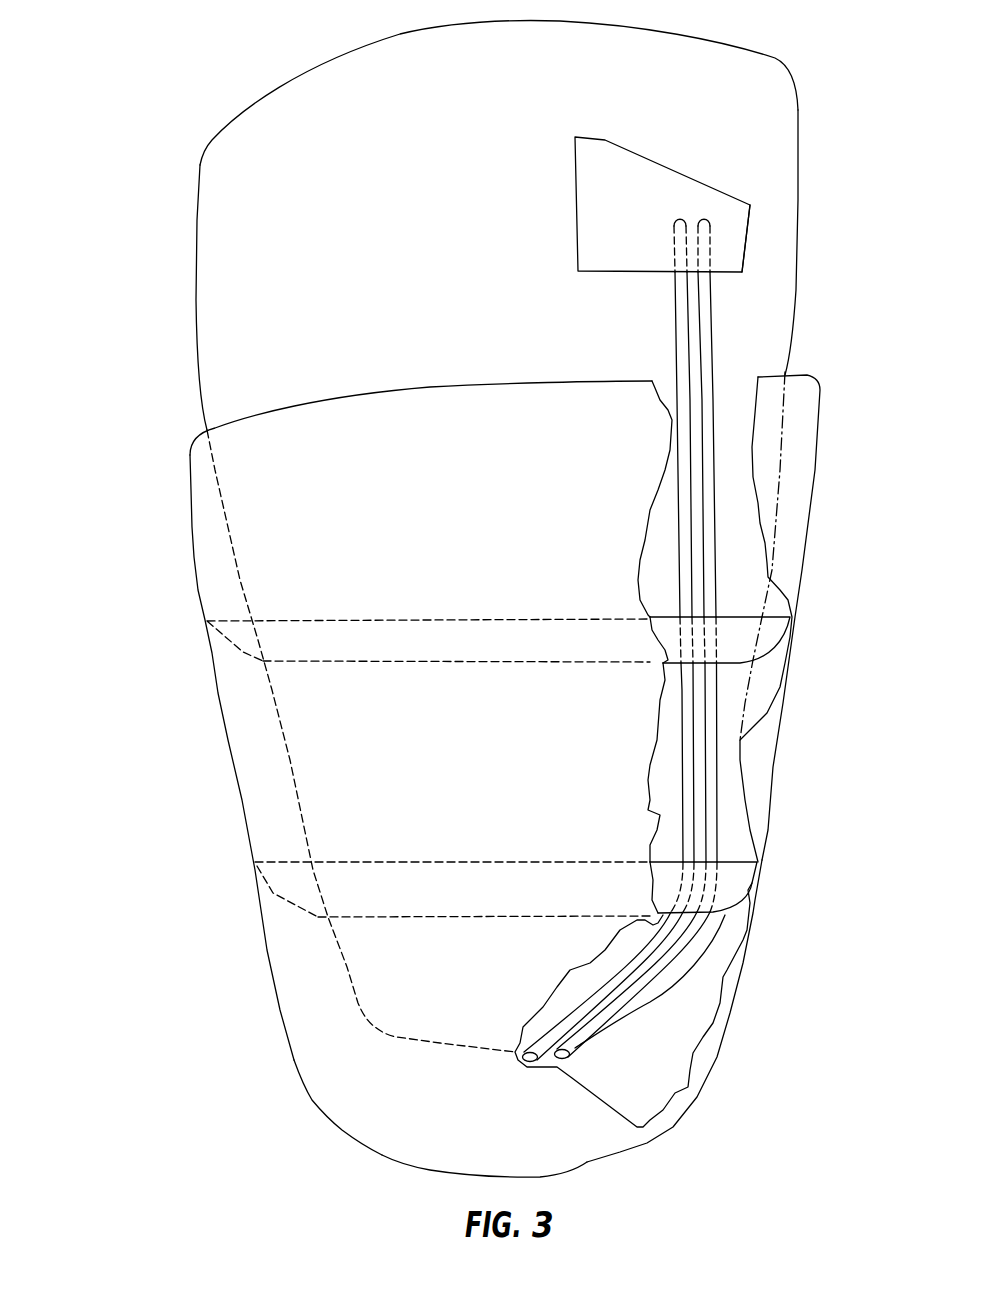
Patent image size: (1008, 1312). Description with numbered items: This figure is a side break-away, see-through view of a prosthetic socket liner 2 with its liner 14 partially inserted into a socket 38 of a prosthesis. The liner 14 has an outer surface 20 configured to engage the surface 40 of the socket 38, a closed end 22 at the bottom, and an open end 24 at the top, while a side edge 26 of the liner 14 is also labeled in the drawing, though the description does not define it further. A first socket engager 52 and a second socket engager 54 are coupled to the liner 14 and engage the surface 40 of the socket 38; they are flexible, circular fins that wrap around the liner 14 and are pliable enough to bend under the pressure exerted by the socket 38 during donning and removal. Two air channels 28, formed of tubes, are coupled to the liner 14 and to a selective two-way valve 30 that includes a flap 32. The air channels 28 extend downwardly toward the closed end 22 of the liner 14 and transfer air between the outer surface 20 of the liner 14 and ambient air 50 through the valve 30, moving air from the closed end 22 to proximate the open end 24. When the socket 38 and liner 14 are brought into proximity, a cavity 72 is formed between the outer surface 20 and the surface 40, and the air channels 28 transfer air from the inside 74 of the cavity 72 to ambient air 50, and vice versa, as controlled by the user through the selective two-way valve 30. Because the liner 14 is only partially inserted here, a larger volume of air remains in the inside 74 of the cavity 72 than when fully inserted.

The prosthetic socket liner 2 is at (160, 190).
The liner 14 is at (798, 212).
The outer surface 20 is at (437, 202).
The closed end 22 is at (397, 1037).
The open end 24 is at (297, 72).
The left edge 26 is at (196, 331).
The air channels 28 is at (680, 530).
The selective two-way valve 30 is at (579, 199).
The flap 32 is at (745, 246).
The socket 38 is at (285, 1033).
The surface of socket 40 is at (778, 596).
The ambient air 50 is at (875, 101).
The first socket engager 52 is at (243, 652).
The second socket engager 54 is at (273, 893).
The cavity 72 is at (380, 1122).
The inside of cavity 74 is at (427, 1137).